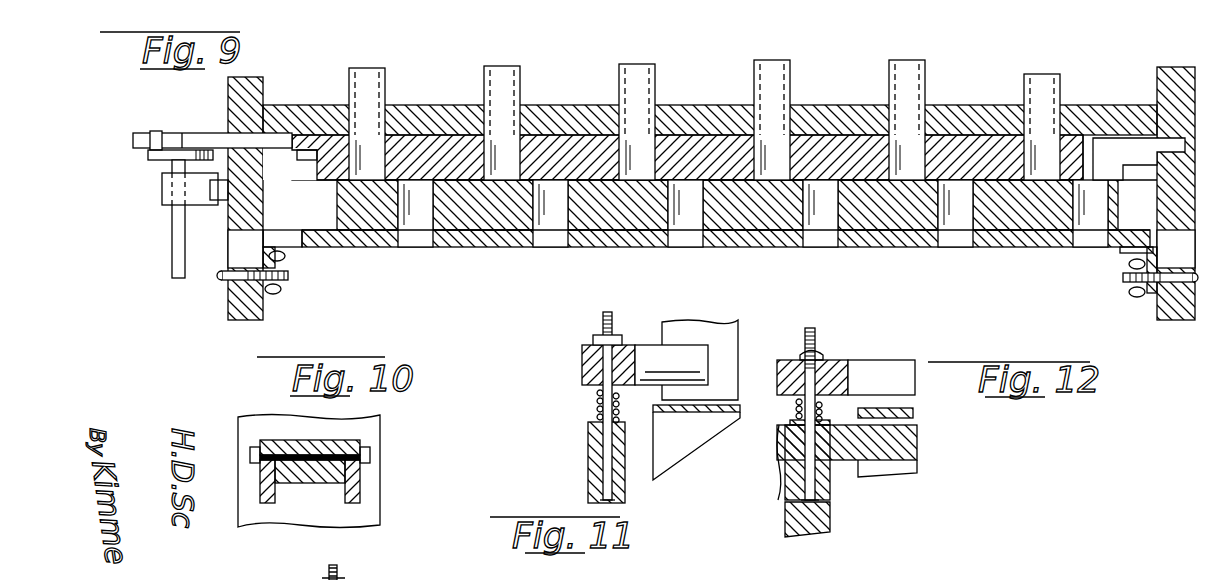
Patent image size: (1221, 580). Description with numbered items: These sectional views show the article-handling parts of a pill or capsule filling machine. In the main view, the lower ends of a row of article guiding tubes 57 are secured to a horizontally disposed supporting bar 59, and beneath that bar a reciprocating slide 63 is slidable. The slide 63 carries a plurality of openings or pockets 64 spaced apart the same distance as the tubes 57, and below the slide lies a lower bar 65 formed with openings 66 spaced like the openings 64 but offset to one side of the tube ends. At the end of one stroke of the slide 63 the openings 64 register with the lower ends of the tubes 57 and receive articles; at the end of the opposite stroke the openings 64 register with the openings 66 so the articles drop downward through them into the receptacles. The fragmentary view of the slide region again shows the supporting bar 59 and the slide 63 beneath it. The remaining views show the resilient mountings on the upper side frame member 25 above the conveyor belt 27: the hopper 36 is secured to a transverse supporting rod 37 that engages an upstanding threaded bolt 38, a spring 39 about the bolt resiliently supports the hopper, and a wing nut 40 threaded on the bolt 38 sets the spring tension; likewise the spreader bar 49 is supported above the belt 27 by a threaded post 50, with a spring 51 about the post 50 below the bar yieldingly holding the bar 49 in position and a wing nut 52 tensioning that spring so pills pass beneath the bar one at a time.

In FIG. 11, the upper side frame member 25 is at (588, 448).
In FIG. 12, the upper side frame member 25 is at (797, 475).
In FIG. 11, the conveyor belt 27 is at (699, 414).
In FIG. 12, the conveyor belt 27 is at (913, 413).
In FIG. 11, the hopper 36 is at (692, 323).
In FIG. 11, the supporting rod 37 is at (651, 345).
In FIG. 11, the threaded bolt 38 is at (606, 316).
In FIG. 11, the spring 39 is at (597, 400).
In FIG. 11, the wing nut 40 is at (593, 340).
In FIG. 12, the spreader bar 49 is at (900, 362).
In FIG. 12, the threaded post 50 is at (818, 336).
In FIG. 12, the spring 51 is at (800, 400).
In FIG. 12, the wing nut 52 is at (800, 353).
In FIG. 9, the article guiding tube 57 is at (484, 76).
In FIG. 9, the supporting bar 59 is at (560, 106).
In FIG. 10, the supporting bar 59 is at (325, 441).
In FIG. 9, the reciprocating slide 63 is at (416, 152).
In FIG. 10, the reciprocating slide 63 is at (310, 484).
In FIG. 9, the opening 64 is at (907, 163).
In FIG. 9, the lower bar 65 is at (377, 218).
In FIG. 9, the opening 66 is at (423, 237).